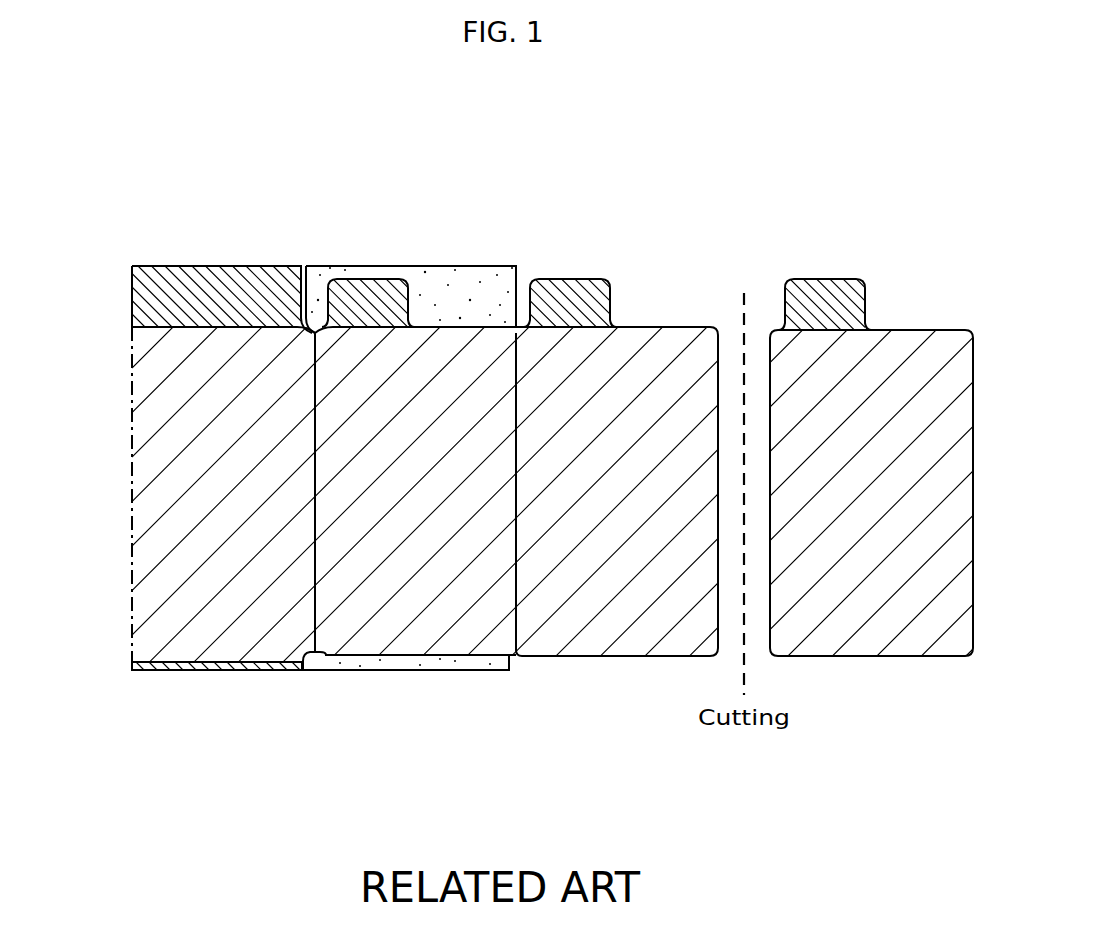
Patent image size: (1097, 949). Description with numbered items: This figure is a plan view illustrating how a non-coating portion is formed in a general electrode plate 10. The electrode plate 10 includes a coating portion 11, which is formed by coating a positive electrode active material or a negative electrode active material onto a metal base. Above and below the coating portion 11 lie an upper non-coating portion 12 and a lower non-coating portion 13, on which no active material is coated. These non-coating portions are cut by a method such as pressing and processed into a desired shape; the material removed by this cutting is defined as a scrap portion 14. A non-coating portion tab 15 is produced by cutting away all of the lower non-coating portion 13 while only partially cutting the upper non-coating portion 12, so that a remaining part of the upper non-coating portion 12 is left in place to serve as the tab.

The electrode plate 10 is at (633, 273).
The coating portion 11 is at (148, 425).
The upper non-coating portion 12 is at (137, 290).
The lower non-coating portion 13 is at (138, 666).
The scrap portion 14 is at (463, 275).
The non-coating portion tab 15 is at (569, 285).